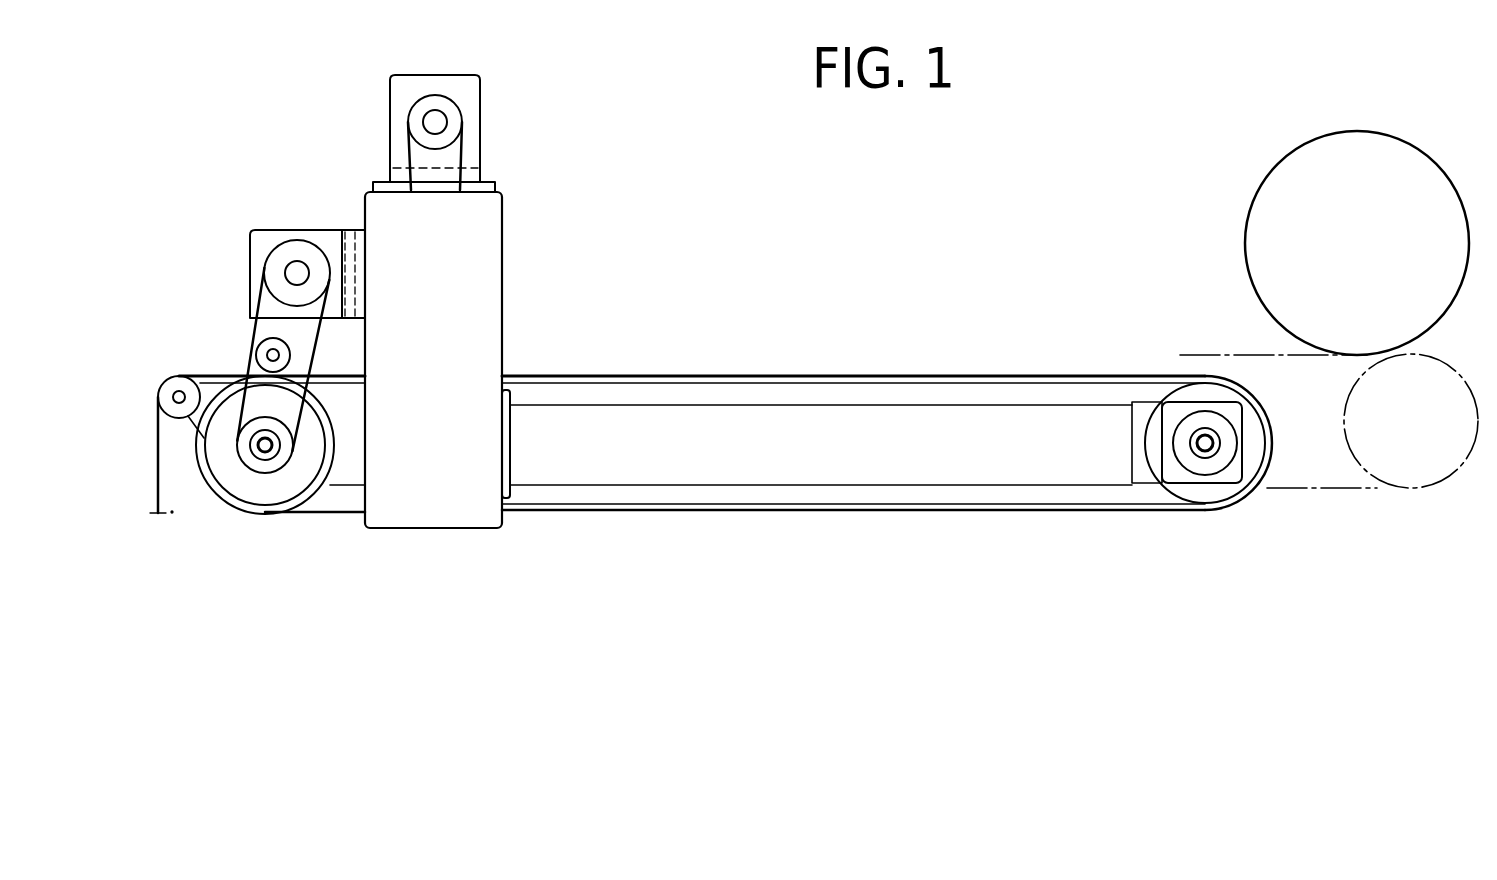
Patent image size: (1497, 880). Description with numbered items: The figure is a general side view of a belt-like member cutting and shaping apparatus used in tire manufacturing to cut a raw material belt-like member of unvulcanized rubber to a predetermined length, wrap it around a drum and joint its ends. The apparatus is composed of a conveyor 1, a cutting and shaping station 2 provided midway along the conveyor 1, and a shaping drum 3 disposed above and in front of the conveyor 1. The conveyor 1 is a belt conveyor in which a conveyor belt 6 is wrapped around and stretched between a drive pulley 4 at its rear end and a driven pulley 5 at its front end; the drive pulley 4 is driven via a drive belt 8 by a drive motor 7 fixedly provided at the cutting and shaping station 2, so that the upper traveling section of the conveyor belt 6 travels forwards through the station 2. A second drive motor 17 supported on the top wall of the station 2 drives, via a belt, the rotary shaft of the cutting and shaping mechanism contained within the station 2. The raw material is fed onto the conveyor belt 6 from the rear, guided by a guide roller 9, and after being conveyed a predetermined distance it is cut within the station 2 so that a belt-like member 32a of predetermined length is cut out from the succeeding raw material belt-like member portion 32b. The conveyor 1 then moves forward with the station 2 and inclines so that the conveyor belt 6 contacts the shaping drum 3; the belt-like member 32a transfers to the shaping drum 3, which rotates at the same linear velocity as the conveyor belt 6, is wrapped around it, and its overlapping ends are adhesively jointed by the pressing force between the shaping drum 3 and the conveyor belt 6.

The conveyor 1 is at (737, 526).
The cutting and shaping station 2 is at (512, 229).
The shaping drum 3 is at (1452, 173).
The drive pulley 4 is at (263, 510).
The driven pulley 5 is at (1225, 510).
The conveyor belt 6 is at (1020, 386).
The drive motor 7 is at (295, 228).
The drive belt 8 is at (262, 331).
The guide roller 9 is at (165, 397).
The drive motor 17 is at (487, 101).
The belt-like member 32a is at (683, 375).
The raw material belt-like member portion 32b is at (195, 375).